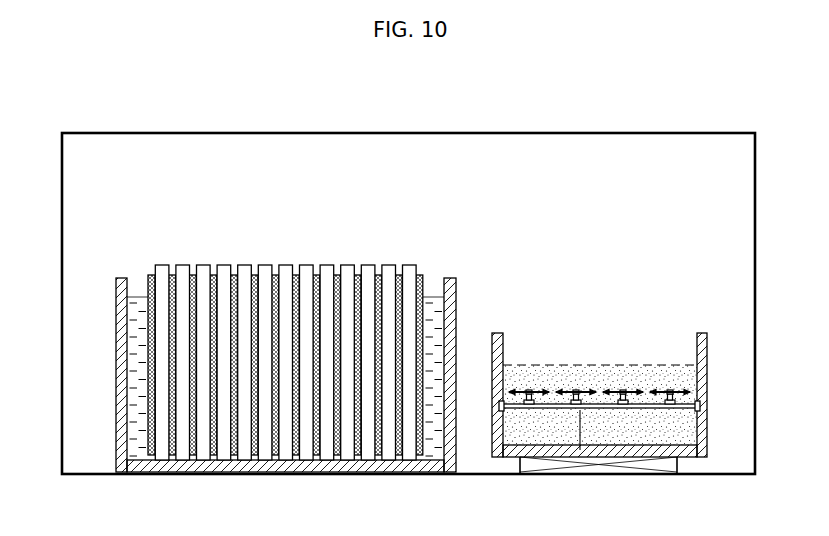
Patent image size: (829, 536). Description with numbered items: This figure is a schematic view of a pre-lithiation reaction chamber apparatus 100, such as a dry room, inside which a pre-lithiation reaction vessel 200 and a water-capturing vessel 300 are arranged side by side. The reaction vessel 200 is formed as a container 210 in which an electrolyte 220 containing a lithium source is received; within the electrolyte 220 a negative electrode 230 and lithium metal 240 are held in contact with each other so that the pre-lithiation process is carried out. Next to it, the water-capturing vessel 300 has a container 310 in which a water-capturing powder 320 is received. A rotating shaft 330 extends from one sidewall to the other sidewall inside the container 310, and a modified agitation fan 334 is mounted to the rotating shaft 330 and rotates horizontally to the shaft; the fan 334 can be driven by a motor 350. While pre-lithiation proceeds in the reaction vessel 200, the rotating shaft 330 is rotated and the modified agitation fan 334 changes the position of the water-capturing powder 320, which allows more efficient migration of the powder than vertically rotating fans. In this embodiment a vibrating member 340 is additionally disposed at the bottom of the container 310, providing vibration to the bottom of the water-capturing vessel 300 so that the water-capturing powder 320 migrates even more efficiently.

The reaction chamber apparatus 100 is at (482, 132).
The pre-lithiation reaction vessel 200 is at (318, 335).
The container 210 is at (457, 312).
The electrolyte 220 is at (433, 300).
The negative electrode 230 is at (343, 275).
The lithium metal 240 is at (396, 265).
The water-capturing vessel 300 is at (612, 373).
The container 310 is at (709, 337).
The water-capturing powder 320 is at (598, 373).
The rotating shaft 330 is at (542, 407).
The modified agitation fan 334 is at (633, 390).
The vibrating member 340 is at (653, 465).
The motor 350 is at (580, 450).